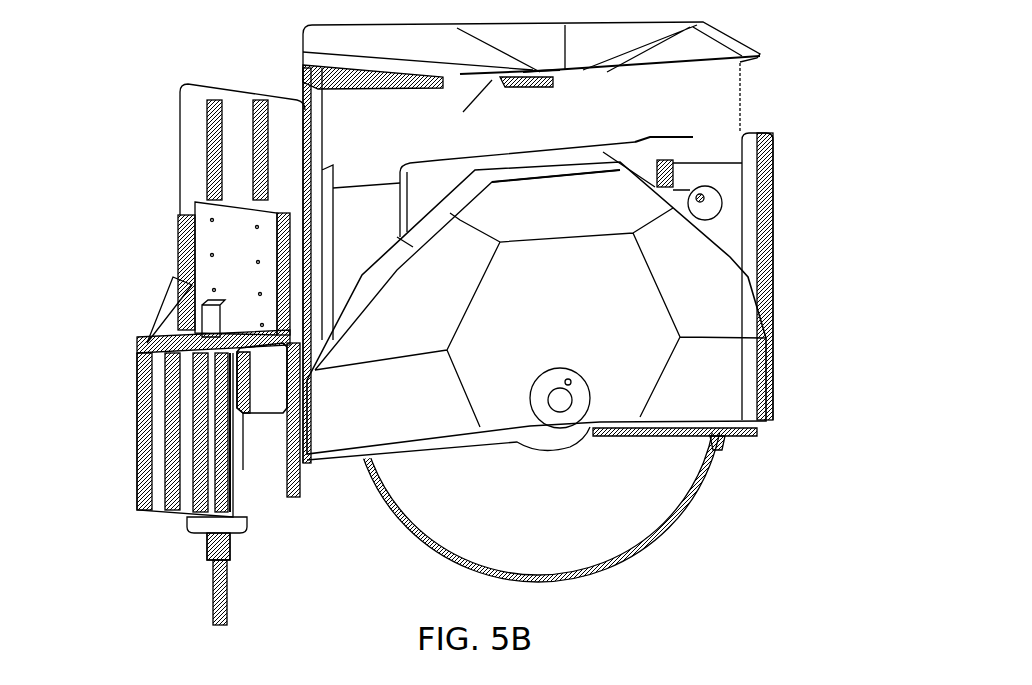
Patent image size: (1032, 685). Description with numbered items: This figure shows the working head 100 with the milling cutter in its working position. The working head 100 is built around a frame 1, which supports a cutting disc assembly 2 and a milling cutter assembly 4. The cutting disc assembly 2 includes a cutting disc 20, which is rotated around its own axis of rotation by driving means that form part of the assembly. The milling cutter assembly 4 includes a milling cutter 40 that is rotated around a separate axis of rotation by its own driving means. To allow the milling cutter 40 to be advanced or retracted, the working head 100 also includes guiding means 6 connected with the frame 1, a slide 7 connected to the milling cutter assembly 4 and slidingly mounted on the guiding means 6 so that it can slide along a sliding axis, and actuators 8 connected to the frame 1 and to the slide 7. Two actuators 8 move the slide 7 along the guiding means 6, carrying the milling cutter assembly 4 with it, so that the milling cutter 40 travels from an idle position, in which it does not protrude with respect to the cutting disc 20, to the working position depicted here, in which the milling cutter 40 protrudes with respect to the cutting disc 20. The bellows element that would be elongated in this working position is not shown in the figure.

The working head 100 is at (810, 160).
The frame 1 is at (720, 100).
The cutting disc assembly 2 is at (778, 410).
The cutting disc 20 is at (653, 490).
The milling cutter assembly 4 is at (128, 447).
The milling cutter 40 is at (213, 607).
The guiding means 6 is at (205, 112).
The slide 7 is at (220, 240).
The actuator 8 is at (173, 263).